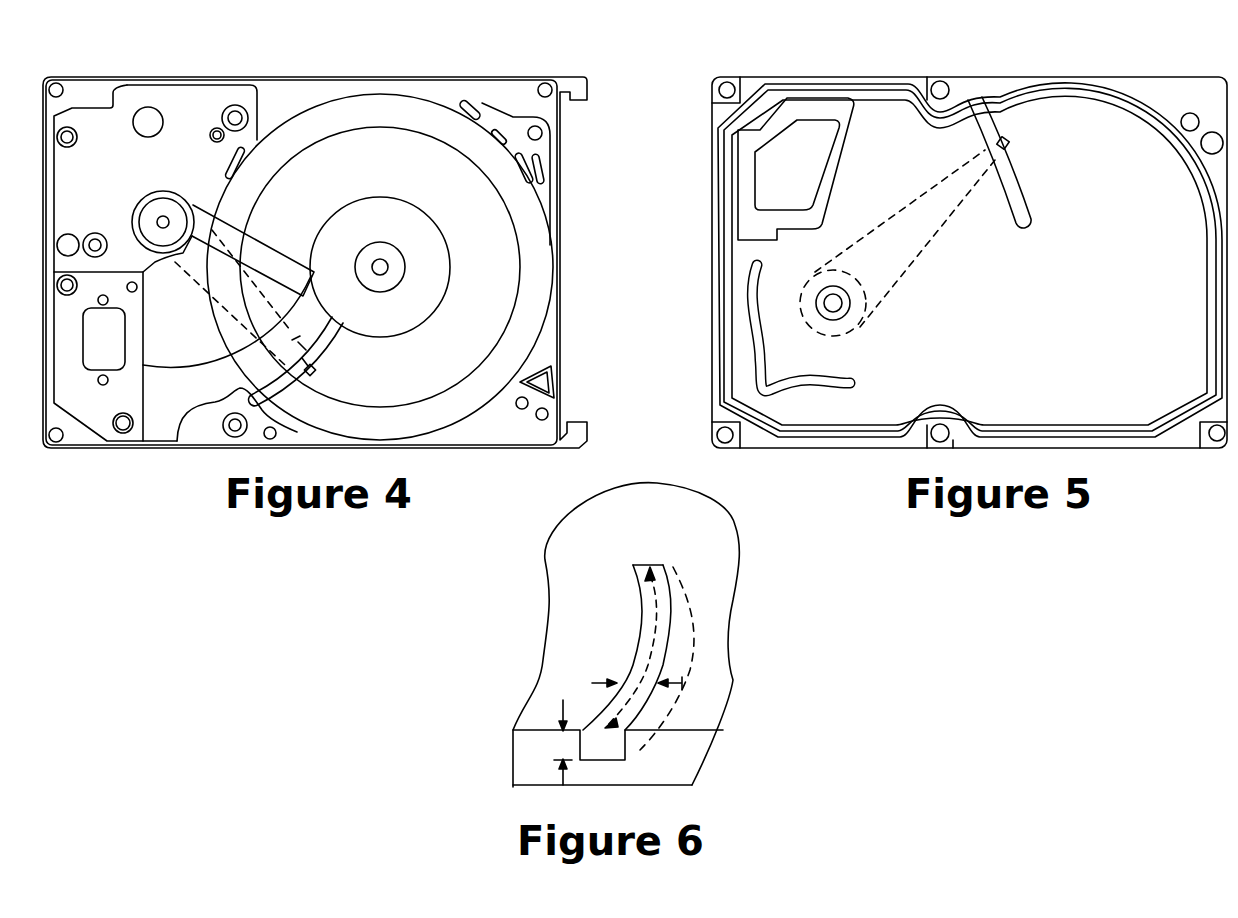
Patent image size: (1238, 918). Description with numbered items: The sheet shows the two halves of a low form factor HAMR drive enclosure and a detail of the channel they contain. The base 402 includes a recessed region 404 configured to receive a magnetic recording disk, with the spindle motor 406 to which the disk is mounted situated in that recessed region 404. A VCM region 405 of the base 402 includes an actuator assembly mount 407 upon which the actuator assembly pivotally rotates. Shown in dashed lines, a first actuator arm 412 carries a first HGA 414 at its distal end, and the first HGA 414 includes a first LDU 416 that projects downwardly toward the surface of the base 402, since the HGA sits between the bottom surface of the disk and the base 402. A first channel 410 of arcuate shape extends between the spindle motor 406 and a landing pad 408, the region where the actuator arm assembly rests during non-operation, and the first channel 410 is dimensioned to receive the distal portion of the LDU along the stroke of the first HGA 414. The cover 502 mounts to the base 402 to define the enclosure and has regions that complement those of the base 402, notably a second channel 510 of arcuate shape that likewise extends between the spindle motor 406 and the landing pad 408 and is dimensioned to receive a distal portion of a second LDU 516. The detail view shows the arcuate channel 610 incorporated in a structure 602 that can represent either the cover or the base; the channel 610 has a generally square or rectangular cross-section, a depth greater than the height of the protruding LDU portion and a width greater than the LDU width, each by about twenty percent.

In FIG. 4, the base 402 is at (127, 77).
In FIG. 4, the recessed region 404 is at (395, 150).
In FIG. 4, the VCM region 405 is at (190, 103).
In FIG. 4, the spindle motor 406 is at (397, 197).
In FIG. 4, the actuator assembly mount 407 is at (137, 207).
In FIG. 4, the landing pad 408 is at (240, 387).
In FIG. 4, the first channel 410 is at (335, 337).
In FIG. 4, the first actuator arm 412 is at (222, 308).
In FIG. 4, the first HGA 414 is at (317, 353).
In FIG. 4, the first LDU 416 is at (333, 367).
In FIG. 5, the cover 502 is at (772, 77).
In FIG. 5, the second channel 510 is at (1032, 200).
In FIG. 5, the second LDU 516 is at (1010, 143).
In FIG. 6, the structure 602 is at (670, 773).
In FIG. 6, the arcuate channel 610 is at (645, 607).